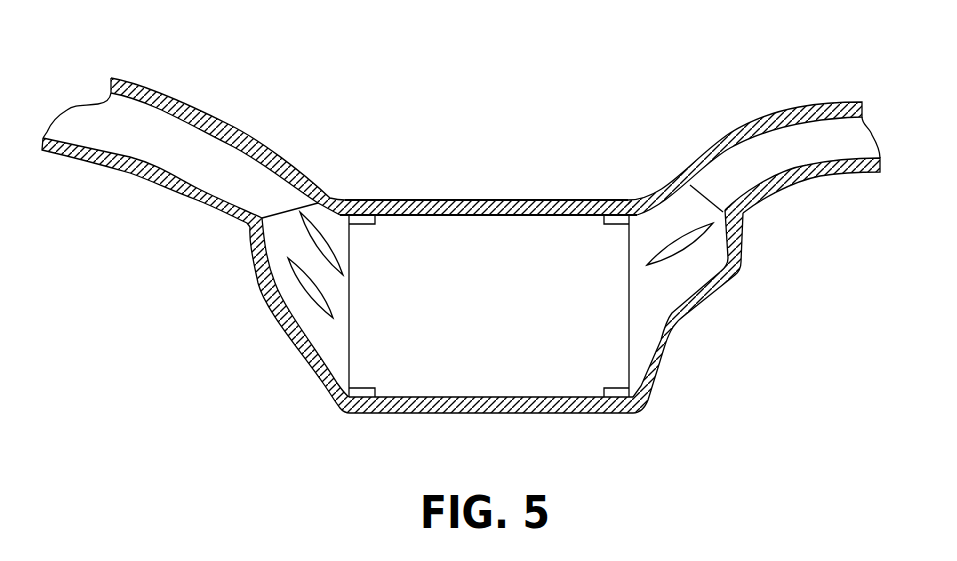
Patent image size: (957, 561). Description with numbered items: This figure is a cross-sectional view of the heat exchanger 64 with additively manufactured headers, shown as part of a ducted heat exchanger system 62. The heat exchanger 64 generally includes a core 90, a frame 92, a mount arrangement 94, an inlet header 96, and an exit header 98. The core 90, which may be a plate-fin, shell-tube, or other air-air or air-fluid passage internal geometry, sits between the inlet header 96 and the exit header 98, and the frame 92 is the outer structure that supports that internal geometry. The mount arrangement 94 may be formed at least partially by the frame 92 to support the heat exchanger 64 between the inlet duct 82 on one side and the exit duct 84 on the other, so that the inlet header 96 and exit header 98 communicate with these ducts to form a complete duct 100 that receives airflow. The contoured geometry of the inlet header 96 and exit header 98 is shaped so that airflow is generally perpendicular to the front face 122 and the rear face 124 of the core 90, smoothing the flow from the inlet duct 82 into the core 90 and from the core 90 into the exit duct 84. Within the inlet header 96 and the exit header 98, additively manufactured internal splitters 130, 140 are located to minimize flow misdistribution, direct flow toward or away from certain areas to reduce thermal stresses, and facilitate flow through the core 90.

The ducted heat exchanger system 62 is at (629, 94).
The heat exchanger 64 is at (446, 192).
The inlet duct 82 is at (189, 100).
The exit duct 84 is at (827, 98).
The core 90 is at (475, 324).
The frame 92 is at (542, 199).
The mount arrangement 94 is at (358, 394).
The inlet header 96 is at (298, 340).
The exit header 98 is at (690, 334).
The complete duct 100 is at (505, 195).
The front face 122 is at (351, 312).
The rear face 124 is at (627, 298).
The internal splitters 130 is at (324, 231).
The internal splitters 140 is at (677, 251).